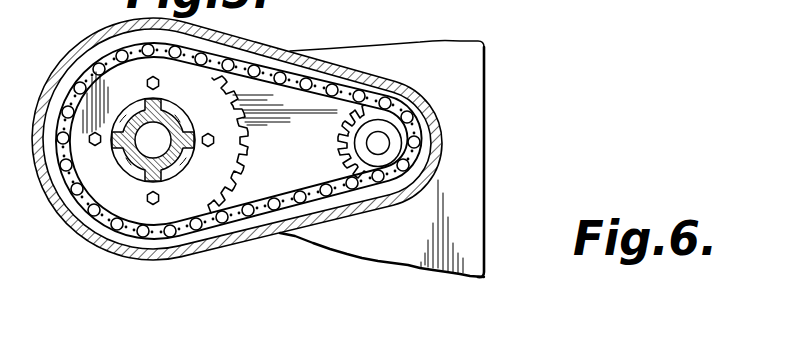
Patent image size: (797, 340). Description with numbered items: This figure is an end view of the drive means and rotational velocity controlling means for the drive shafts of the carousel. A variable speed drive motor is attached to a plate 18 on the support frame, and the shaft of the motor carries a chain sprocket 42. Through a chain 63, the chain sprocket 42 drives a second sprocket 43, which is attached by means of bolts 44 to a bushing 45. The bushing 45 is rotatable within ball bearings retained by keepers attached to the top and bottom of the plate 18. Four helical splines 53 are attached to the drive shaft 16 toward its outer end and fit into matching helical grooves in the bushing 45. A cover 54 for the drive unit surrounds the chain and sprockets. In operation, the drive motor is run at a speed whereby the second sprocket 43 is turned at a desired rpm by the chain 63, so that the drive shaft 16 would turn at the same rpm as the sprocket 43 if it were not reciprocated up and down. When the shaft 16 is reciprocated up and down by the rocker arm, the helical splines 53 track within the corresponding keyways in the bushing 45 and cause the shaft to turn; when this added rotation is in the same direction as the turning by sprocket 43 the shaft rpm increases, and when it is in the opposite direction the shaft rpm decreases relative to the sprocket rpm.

The drive shaft 16 is at (195, 124).
The plate 18 is at (467, 71).
The chain sprocket 42 is at (340, 145).
The second sprocket 43 is at (226, 169).
The bolts 44 is at (147, 198).
The bushing 45 is at (140, 107).
The helical splines 53 is at (90, 134).
The cover 54 is at (349, 72).
The chain 63 is at (245, 212).